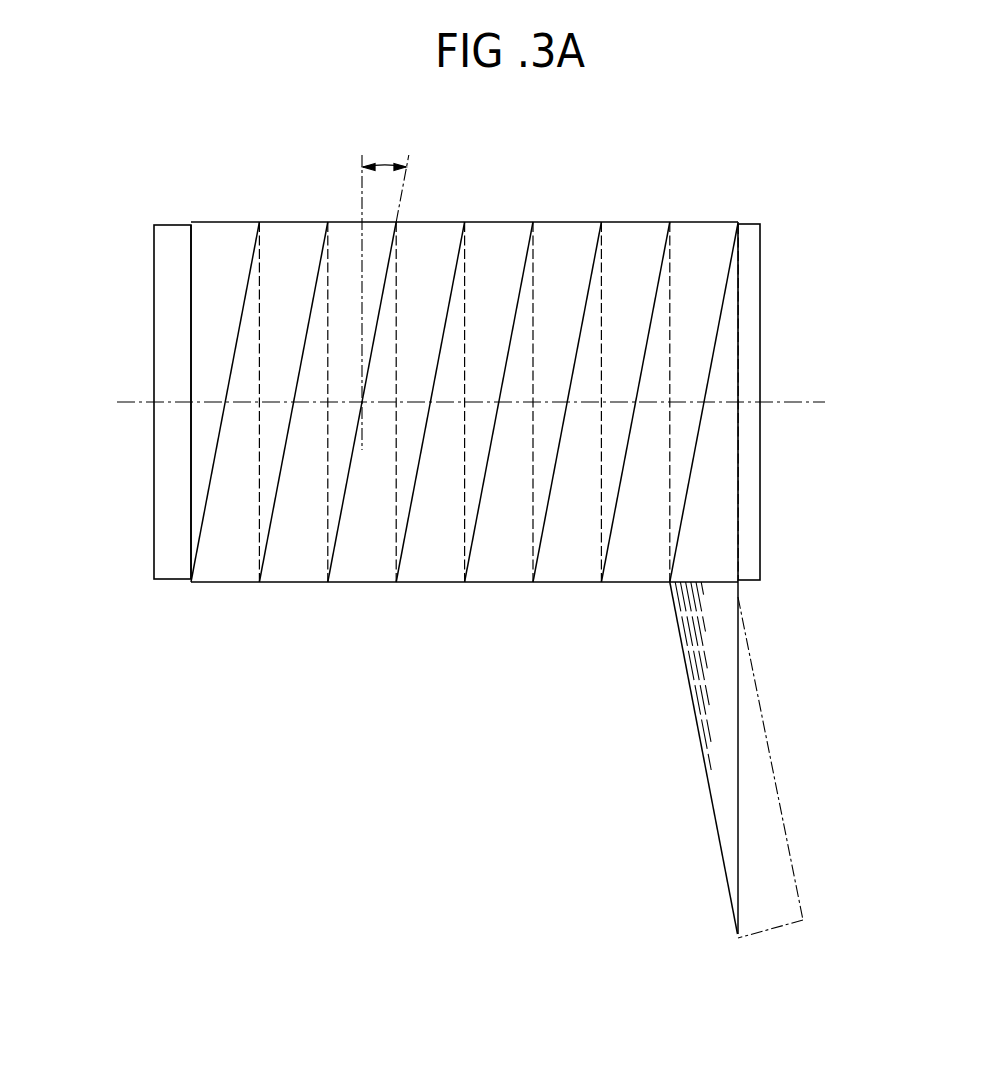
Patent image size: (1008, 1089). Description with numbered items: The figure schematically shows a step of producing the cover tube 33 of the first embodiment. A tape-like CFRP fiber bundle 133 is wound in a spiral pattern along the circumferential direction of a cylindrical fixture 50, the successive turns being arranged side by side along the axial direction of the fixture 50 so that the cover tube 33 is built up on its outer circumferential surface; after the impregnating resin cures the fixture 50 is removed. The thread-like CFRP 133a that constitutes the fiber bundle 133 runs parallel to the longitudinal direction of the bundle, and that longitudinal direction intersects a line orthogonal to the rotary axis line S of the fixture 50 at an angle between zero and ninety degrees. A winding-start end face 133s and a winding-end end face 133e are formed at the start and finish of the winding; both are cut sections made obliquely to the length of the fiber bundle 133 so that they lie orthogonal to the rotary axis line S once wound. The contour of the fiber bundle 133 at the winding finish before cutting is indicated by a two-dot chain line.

The cover tube 33 is at (566, 176).
The fixture 50 is at (757, 272).
The CFRP fiber bundle 133 is at (225, 222).
The winding-start end face 133s is at (170, 291).
The thread-like CFRP 133a is at (687, 655).
The winding-end end face 133e is at (765, 769).
The rotary axis line S is at (787, 405).